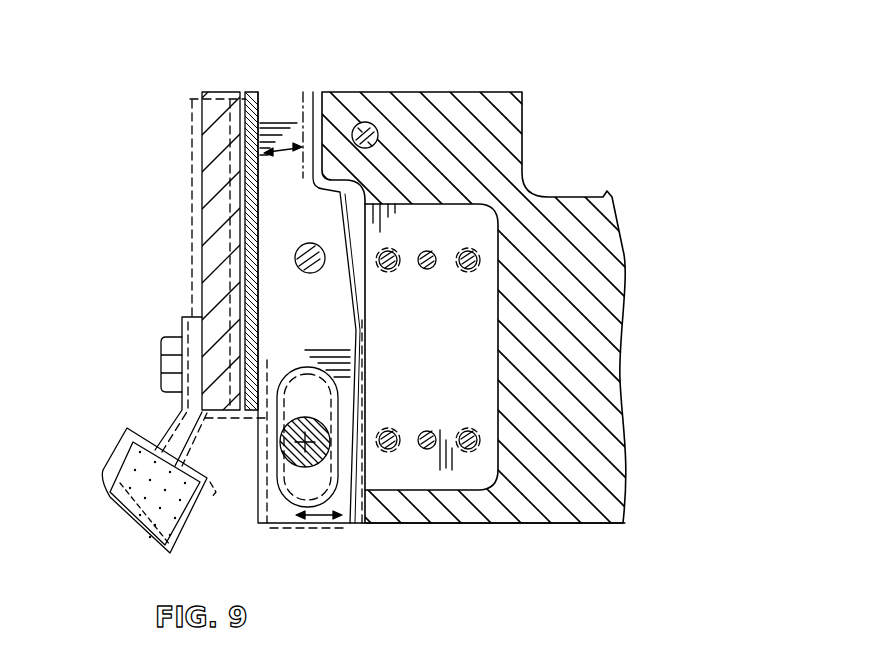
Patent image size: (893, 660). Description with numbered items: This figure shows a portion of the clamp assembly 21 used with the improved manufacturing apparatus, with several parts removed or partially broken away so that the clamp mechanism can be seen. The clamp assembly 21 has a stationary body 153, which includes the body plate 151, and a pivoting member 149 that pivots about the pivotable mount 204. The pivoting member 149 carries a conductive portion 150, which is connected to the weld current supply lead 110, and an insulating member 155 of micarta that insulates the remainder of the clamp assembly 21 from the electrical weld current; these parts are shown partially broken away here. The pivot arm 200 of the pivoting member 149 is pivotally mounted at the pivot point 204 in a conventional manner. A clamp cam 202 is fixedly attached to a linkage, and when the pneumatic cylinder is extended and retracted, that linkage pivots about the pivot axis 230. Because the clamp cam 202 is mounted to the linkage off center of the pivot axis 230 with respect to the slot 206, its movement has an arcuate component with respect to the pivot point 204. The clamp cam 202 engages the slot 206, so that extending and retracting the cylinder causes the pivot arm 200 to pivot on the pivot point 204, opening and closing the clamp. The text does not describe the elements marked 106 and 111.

The clamp assembly 21 is at (238, 86).
The pivoting member 149 is at (290, 92).
The screw 106 is at (367, 130).
The stationary body 153 is at (497, 100).
The body plate 151 is at (520, 198).
The pivot arm 200 is at (257, 205).
The insulating member 155 is at (303, 210).
The conductive portion 150 is at (209, 272).
The pivotable mount 204 is at (305, 262).
The bracket 111 is at (160, 366).
The weld current supply lead 110 is at (115, 458).
The pivot axis 230 is at (311, 432).
The clamp cam 202 is at (310, 465).
The slot 206 is at (283, 490).